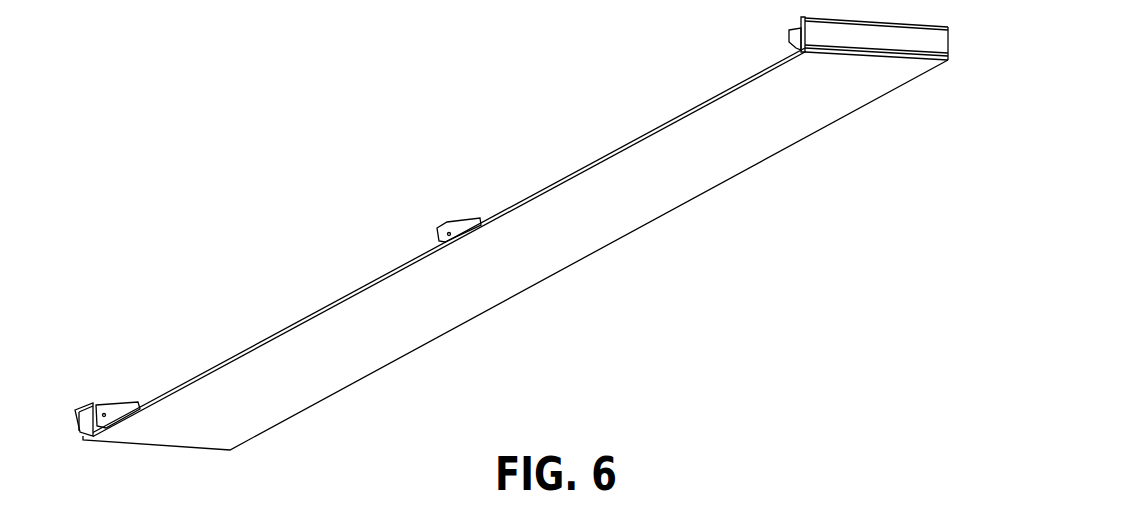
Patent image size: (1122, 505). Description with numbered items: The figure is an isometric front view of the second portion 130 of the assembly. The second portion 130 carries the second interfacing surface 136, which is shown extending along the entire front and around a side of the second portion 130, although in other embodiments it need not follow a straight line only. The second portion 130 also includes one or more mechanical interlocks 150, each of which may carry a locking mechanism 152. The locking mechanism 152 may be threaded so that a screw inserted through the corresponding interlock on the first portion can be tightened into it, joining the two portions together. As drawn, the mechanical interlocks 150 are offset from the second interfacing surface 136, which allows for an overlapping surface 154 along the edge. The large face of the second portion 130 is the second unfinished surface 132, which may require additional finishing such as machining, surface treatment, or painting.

The second portion 130 is at (495, 252).
The second unfinished surface 132 is at (490, 285).
The second interfacing surface 136 is at (78, 416).
The mechanical interlock 150 is at (449, 214).
The locking mechanism 152 is at (104, 410).
The overlapping surface 154 is at (612, 150).